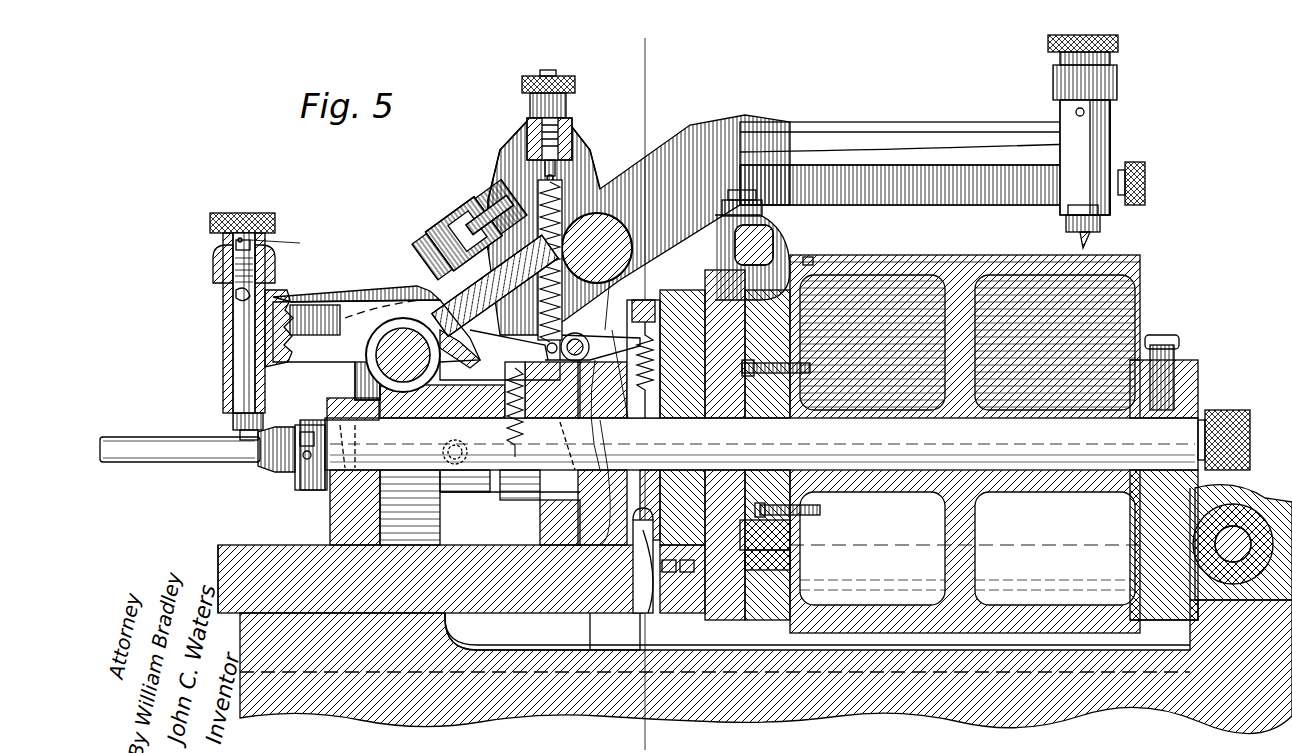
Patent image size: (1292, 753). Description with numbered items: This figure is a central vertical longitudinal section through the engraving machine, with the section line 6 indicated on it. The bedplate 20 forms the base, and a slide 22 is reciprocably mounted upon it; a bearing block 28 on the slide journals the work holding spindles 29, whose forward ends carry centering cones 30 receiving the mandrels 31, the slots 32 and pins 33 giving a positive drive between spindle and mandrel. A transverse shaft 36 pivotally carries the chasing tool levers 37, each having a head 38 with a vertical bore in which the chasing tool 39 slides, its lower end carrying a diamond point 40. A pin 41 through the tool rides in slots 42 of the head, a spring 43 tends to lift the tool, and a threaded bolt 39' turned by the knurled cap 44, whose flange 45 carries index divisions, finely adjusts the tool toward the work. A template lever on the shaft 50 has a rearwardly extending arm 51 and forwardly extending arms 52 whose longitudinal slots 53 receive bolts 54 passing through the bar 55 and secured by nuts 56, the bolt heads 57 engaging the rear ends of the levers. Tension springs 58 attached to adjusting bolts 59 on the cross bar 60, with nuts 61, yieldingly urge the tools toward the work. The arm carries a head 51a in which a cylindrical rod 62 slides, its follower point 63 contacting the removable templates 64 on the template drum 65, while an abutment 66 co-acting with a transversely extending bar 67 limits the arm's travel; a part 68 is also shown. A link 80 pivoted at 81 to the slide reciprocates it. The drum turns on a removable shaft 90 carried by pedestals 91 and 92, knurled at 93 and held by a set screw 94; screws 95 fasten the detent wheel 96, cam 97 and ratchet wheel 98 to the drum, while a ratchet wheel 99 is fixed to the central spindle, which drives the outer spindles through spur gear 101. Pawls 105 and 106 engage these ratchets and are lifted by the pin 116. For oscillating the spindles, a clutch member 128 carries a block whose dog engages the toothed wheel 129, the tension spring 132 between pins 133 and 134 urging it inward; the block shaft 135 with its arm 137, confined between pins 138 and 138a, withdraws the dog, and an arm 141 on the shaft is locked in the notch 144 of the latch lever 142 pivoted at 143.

The section line 6 is at (642, 382).
The bedplate 20 is at (1165, 712).
The slide 22 is at (250, 546).
The bearing block 28 is at (478, 530).
The work holding spindle 29 is at (432, 480).
The centering cone 30 is at (308, 488).
The mandrel 31 is at (205, 458).
The slot 32 is at (312, 425).
The pin 33 is at (280, 462).
The shaft 36 is at (400, 340).
The chasing tool lever 37 is at (338, 305).
The head 38 is at (222, 320).
The chasing tool 39 is at (210, 323).
The bolt 39' is at (289, 240).
The diamond point 40 is at (235, 432).
The pin 41 is at (236, 290).
The slot 42 is at (235, 305).
The spring 43 is at (302, 293).
The cap 44 is at (258, 212).
The flange 45 is at (213, 255).
The shaft 50 is at (590, 235).
The rearwardly extending arm 51 is at (935, 150).
The head 51a is at (1085, 148).
The forwardly extending arm 52 is at (520, 250).
The longitudinal slot 53 is at (452, 283).
The bolt 54 is at (480, 258).
The bar 55 is at (470, 265).
The nut 56 is at (465, 262).
The head 57 is at (505, 312).
The tension spring 58 is at (545, 195).
The adjusting bolt 59 is at (548, 148).
The cross bar 60 is at (570, 135).
The nut 61 is at (530, 100).
The cylindrical rod 62 is at (1098, 210).
The follower point 63 is at (1092, 238).
The removable template 64 is at (960, 255).
The template drum 65 is at (995, 268).
The abutment 66 is at (764, 208).
The transversely extending bar 67 is at (770, 245).
The lug 68 is at (486, 345).
The link 80 is at (1278, 515).
The pivotal connection 81 is at (1233, 562).
The removable shaft 90 is at (1178, 420).
The pedestal 91 is at (715, 590).
The pedestal 92 is at (1192, 478).
The knurled end 93 is at (1250, 405).
The set screw 94 is at (1180, 345).
The screw 95 is at (778, 375).
The detent wheel 96 is at (800, 555).
The cam 97 is at (795, 568).
The ratchet wheel 98 is at (760, 618).
The ratchet wheel 99 is at (695, 572).
The spur gear 101 is at (520, 490).
The pawl 105 is at (840, 262).
The pawl 106 is at (639, 225).
The pin 116 is at (725, 445).
The clutch member 128 is at (606, 631).
The toothed wheel 129 is at (648, 615).
The tension spring 132 is at (682, 417).
The pin 133 is at (631, 349).
The pin 134 is at (628, 418).
The block shaft 135 is at (520, 418).
The arm 137 is at (600, 348).
The pin 138 is at (612, 240).
The pin 138a is at (596, 446).
The arm 141 is at (590, 631).
The latch lever 142 is at (480, 440).
The pivot 143 is at (420, 445).
The notch 144 is at (480, 618).